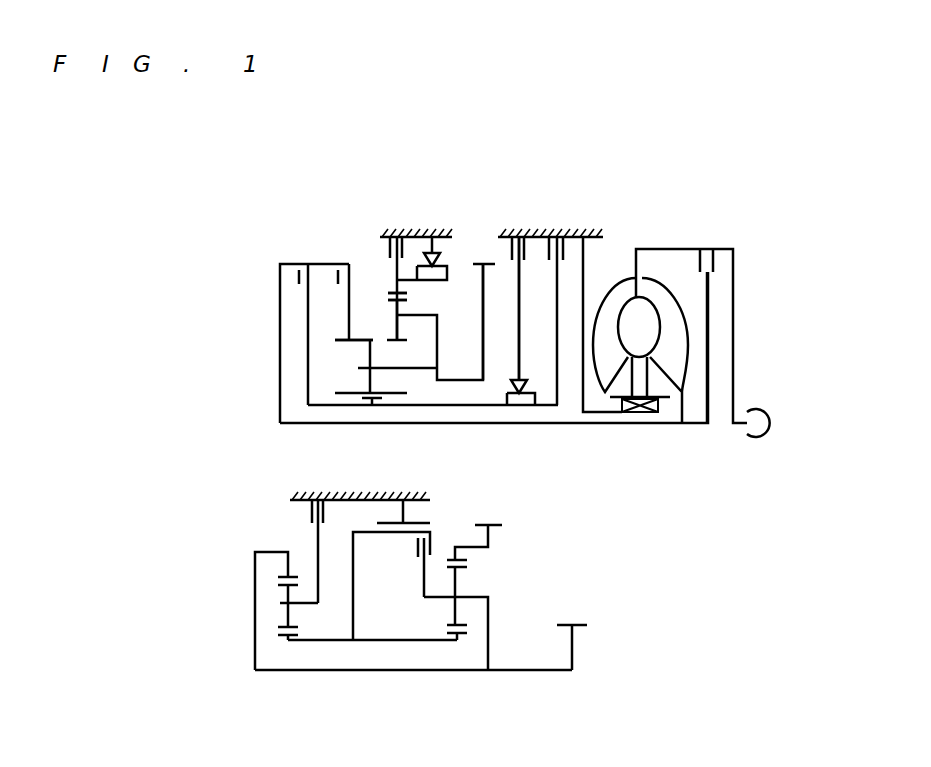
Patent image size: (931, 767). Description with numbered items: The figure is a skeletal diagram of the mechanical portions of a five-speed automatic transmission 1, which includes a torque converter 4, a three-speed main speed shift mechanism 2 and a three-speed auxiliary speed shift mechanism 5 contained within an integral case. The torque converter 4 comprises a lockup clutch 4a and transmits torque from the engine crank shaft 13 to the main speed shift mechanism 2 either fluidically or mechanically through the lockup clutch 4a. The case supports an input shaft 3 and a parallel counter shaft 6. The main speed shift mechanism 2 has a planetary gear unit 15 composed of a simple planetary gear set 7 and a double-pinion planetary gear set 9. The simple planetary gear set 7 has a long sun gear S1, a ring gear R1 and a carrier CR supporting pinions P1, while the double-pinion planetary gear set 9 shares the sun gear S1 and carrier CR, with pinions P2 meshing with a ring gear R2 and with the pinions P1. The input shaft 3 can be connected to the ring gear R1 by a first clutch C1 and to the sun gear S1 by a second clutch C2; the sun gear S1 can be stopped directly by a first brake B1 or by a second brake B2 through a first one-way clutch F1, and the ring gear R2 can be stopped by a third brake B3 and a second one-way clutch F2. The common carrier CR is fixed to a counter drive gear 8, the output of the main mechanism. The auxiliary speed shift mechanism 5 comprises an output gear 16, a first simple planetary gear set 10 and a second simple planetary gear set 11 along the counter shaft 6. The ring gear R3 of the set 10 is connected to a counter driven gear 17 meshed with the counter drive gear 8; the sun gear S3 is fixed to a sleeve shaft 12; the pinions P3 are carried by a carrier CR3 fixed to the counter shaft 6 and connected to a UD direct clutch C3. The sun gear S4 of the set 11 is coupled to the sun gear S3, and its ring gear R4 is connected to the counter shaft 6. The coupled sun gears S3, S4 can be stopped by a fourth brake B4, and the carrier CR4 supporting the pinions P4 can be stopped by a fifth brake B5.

The five-speed automatic transmission 1 is at (595, 183).
The main speed shift mechanism 2 is at (243, 277).
The input shaft 3 is at (577, 425).
The torque converter 4 is at (668, 248).
The lockup clutch 4a is at (712, 258).
The auxiliary speed shift mechanism 5 is at (177, 538).
The counter shaft 6 is at (375, 673).
The simple planetary gear set 7 is at (353, 336).
The counter drive gear 8 is at (483, 263).
The double-pinion planetary gear set 9 is at (392, 290).
The first simple planetary gear set 10 is at (494, 564).
The second simple planetary gear set 11 is at (270, 552).
The sleeve shaft 12 is at (332, 645).
The engine crank shaft 13 is at (747, 436).
The planetary gear unit 15 is at (362, 137).
The output gear 16 is at (587, 625).
The counter driven gear 17 is at (497, 523).
The first clutch C1 is at (347, 288).
The second clutch C2 is at (305, 321).
The UD direct clutch C3 is at (401, 566).
The first brake B1 is at (554, 302).
The second brake B2 is at (514, 289).
The third brake B3 is at (393, 269).
The fourth brake B4 is at (391, 553).
The fifth brake B5 is at (312, 535).
The first one-way clutch F1 is at (532, 321).
The second one-way clutch F2 is at (424, 239).
The ring gear R1 is at (345, 338).
The ring gear R2 is at (407, 292).
The ring gear R3 is at (447, 560).
The ring gear R4 is at (278, 575).
The pinions P1 is at (333, 343).
The pinions P2 is at (395, 307).
The pinions P3 is at (455, 609).
The pinions P4 is at (282, 613).
The long sun gear S1 is at (362, 405).
The sun gear S3 is at (463, 637).
The sun gear S4 is at (280, 640).
The carrier CR is at (460, 347).
The carrier CR3 is at (482, 597).
The carrier CR4 is at (297, 601).